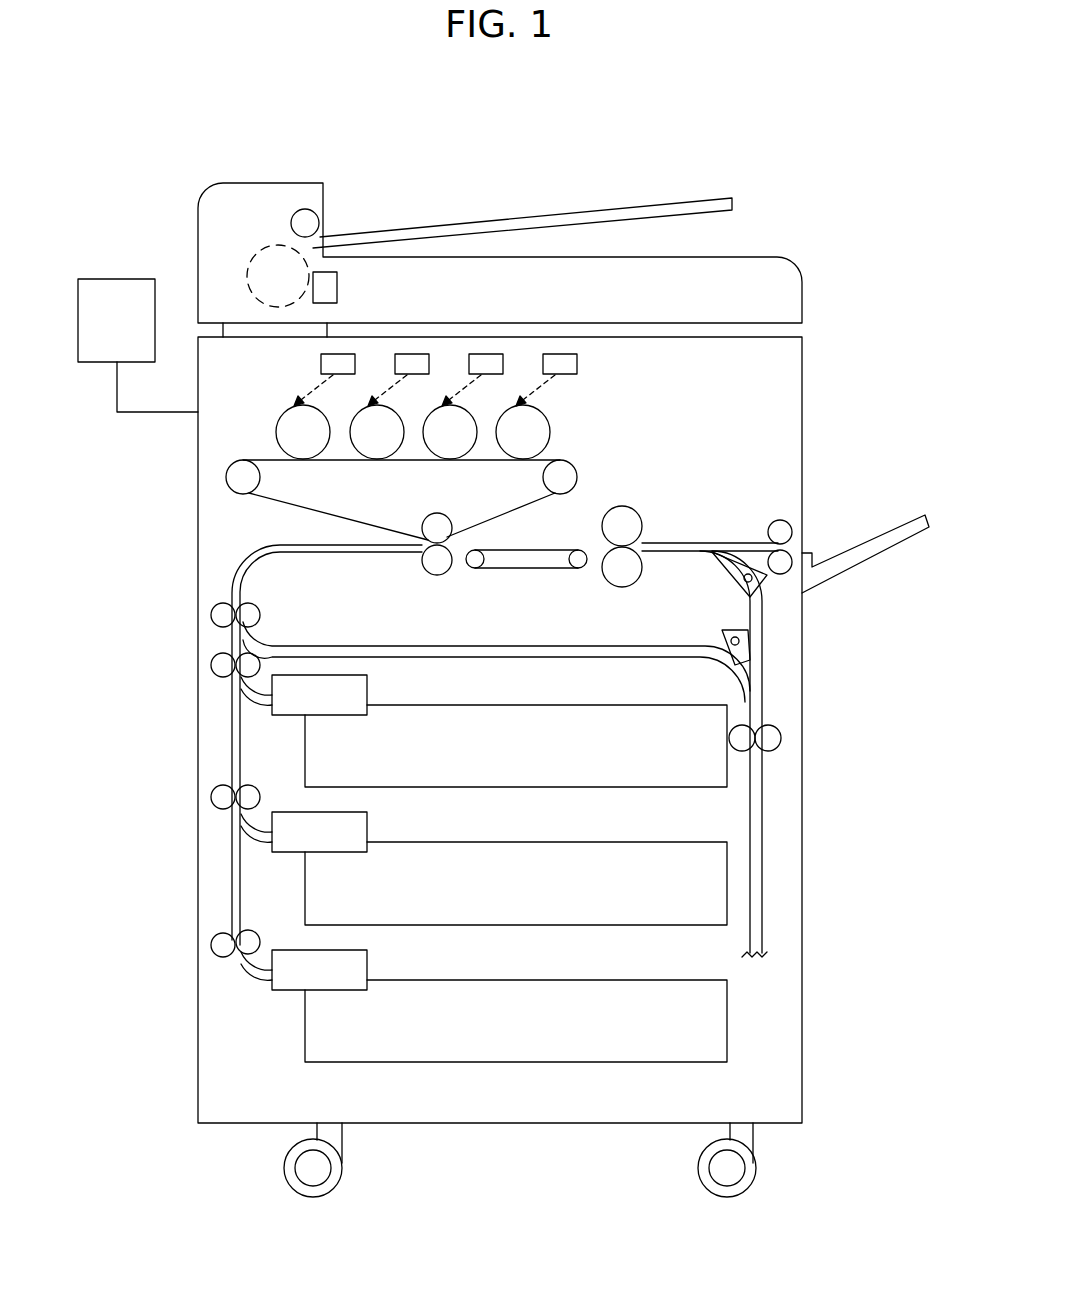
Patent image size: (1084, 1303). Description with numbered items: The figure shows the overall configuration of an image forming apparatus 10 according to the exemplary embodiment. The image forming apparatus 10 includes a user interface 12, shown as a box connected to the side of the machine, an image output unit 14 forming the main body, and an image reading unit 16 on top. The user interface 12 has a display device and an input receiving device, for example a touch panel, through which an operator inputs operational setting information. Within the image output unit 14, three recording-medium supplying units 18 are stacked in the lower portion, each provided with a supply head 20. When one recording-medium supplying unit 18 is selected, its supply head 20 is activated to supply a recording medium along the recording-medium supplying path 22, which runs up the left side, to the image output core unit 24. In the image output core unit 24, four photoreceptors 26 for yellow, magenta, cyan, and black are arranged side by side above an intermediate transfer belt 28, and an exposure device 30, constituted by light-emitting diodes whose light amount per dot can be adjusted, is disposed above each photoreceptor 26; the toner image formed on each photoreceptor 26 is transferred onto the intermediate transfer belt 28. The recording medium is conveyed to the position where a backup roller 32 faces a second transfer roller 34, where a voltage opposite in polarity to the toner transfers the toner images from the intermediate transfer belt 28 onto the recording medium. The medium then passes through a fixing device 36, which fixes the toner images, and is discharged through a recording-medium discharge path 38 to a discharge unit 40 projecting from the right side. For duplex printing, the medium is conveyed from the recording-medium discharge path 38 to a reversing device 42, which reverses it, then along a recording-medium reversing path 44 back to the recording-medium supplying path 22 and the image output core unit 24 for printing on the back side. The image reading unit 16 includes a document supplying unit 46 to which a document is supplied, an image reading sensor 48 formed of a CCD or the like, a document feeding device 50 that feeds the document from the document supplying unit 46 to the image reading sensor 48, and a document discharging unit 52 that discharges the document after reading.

The image forming apparatus 10 is at (672, 135).
The user interface 12 is at (117, 279).
The image output unit 14 is at (198, 512).
The image reading unit 16 is at (802, 291).
The recording-medium supplying unit 18 is at (632, 788).
The supply head 20 is at (280, 717).
The recording-medium supplying path 22 is at (256, 562).
The image output core unit 24 is at (394, 466).
The photoreceptor 26 is at (546, 429).
The intermediate transfer belt 28 is at (286, 503).
The exposure device 30 is at (580, 367).
The backup roller 32 is at (441, 518).
The second transfer roller 34 is at (440, 576).
The fixing device 36 is at (641, 520).
The recording-medium discharge path 38 is at (693, 562).
The discharge unit 40 is at (885, 528).
The reversing device 42 is at (772, 812).
The recording-medium reversing path 44 is at (583, 648).
The document supplying unit 46 is at (451, 220).
The image reading sensor 48 is at (339, 290).
The document feeding device 50 is at (270, 183).
The document discharging unit 52 is at (733, 256).